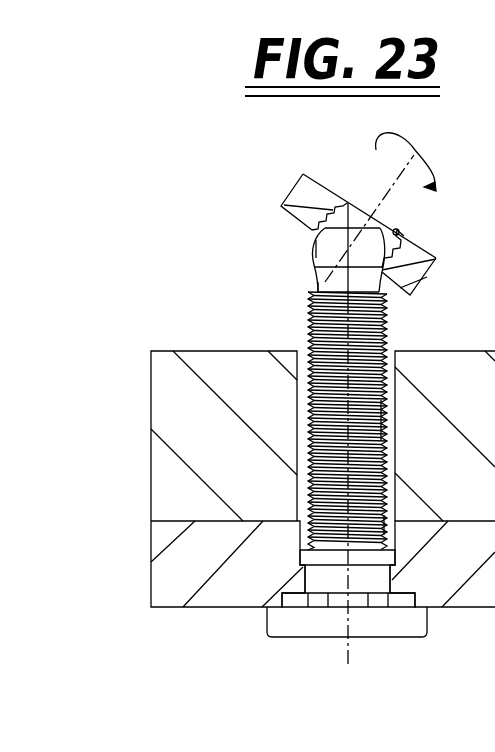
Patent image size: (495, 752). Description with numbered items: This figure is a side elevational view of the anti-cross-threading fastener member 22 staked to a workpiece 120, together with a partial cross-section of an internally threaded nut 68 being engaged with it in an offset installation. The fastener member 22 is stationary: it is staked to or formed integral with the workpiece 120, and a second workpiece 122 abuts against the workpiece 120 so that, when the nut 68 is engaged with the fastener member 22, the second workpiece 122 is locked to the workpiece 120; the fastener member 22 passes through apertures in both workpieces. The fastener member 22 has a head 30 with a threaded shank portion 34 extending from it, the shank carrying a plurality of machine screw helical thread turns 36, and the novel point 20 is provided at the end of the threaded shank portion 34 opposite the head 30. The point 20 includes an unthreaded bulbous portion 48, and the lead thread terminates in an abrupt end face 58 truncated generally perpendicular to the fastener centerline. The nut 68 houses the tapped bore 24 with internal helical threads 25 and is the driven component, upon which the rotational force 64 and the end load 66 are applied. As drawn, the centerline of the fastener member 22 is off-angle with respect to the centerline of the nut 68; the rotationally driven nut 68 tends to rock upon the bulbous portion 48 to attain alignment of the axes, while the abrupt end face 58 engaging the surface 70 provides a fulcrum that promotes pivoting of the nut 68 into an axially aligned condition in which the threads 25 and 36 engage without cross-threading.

The point 20 is at (314, 258).
The fastener member 22 is at (389, 524).
The tapped bore 24 is at (348, 206).
The internal helical threads 25 is at (399, 234).
The head 30 is at (410, 632).
The threaded shank portion 34 is at (378, 420).
The machine screw helical thread turns 36 is at (388, 338).
The unthreaded bulbous portion 48 is at (320, 239).
The abrupt end face 58 is at (327, 292).
The rotational force 64 is at (398, 146).
The end load 66 is at (417, 153).
The nut 68 is at (430, 267).
The surface 70 is at (292, 216).
The workpiece 120 is at (215, 602).
The second workpiece 122 is at (226, 360).